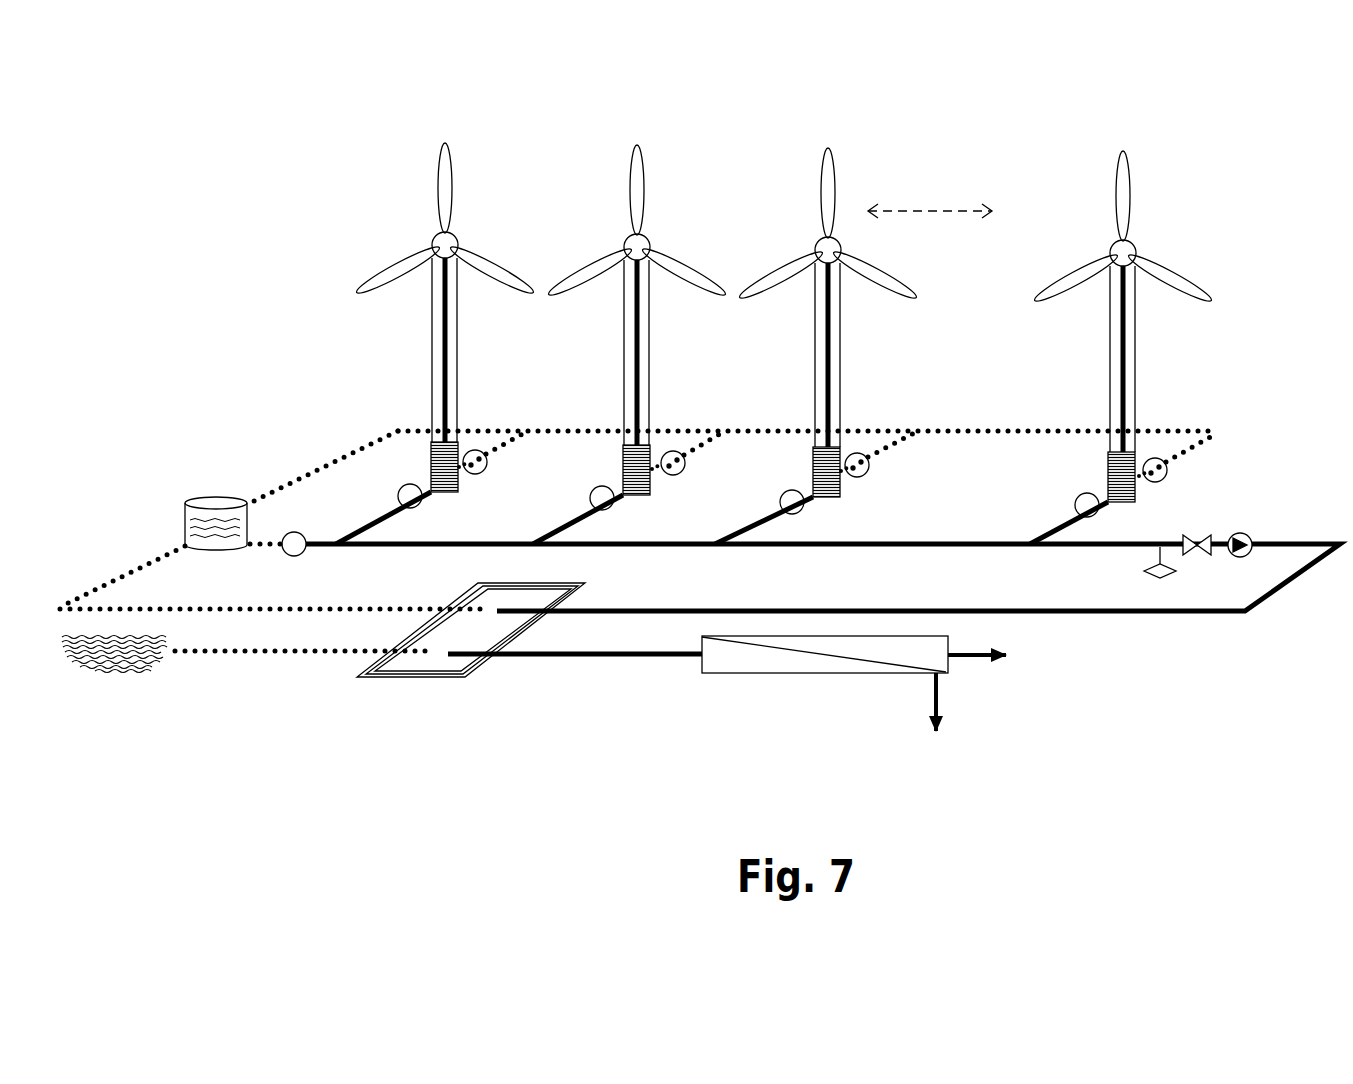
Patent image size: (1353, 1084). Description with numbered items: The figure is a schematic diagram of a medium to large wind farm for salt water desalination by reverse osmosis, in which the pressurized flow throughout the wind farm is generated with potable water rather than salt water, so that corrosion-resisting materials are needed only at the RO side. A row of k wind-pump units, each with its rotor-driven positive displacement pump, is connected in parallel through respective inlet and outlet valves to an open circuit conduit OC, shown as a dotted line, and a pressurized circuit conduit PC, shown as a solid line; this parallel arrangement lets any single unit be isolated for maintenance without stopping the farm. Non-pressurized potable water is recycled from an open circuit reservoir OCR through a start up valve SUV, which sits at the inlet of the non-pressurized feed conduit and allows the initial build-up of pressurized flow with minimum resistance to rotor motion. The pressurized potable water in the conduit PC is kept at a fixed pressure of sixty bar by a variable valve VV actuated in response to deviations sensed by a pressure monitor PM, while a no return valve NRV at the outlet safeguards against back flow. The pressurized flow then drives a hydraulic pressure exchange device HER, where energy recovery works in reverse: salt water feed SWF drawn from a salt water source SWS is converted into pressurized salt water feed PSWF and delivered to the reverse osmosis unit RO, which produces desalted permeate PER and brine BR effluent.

The open circuit conduit OC is at (1005, 418).
The pressurized circuit conduit PC is at (822, 564).
The open circuit reservoir OCR is at (216, 508).
The start up valve SUV is at (279, 556).
The hydraulic pressure exchange device HER is at (471, 647).
The salt water source SWS is at (114, 675).
The salt water feed SWF is at (384, 637).
The pressurized salt water feed PSWF is at (530, 640).
The reverse osmosis unit RO is at (825, 654).
The permeate PER is at (1002, 657).
The brine BR is at (940, 717).
The variable valve VV is at (1197, 560).
The no return valve NRV is at (1242, 559).
The pressure monitor PM is at (1160, 575).